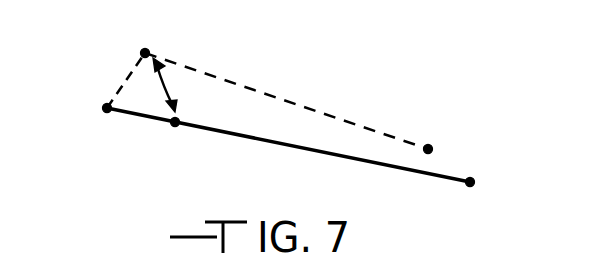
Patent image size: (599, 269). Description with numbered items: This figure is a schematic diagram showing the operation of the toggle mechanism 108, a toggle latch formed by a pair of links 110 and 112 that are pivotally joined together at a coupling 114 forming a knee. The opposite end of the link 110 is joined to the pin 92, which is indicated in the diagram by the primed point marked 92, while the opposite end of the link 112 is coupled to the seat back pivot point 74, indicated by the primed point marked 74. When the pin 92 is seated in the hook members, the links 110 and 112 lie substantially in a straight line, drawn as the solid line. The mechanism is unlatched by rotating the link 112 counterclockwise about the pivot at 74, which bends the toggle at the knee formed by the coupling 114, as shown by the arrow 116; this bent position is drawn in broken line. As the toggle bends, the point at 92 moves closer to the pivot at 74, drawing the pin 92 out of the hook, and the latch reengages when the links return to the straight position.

The seat back pivot point 74 is at (105, 110).
The pin 92 is at (430, 147).
The toggle mechanism 108 is at (300, 89).
The link 110 is at (351, 162).
The link 112 is at (128, 82).
The coupling 114 is at (145, 52).
The arrow 116 is at (166, 85).